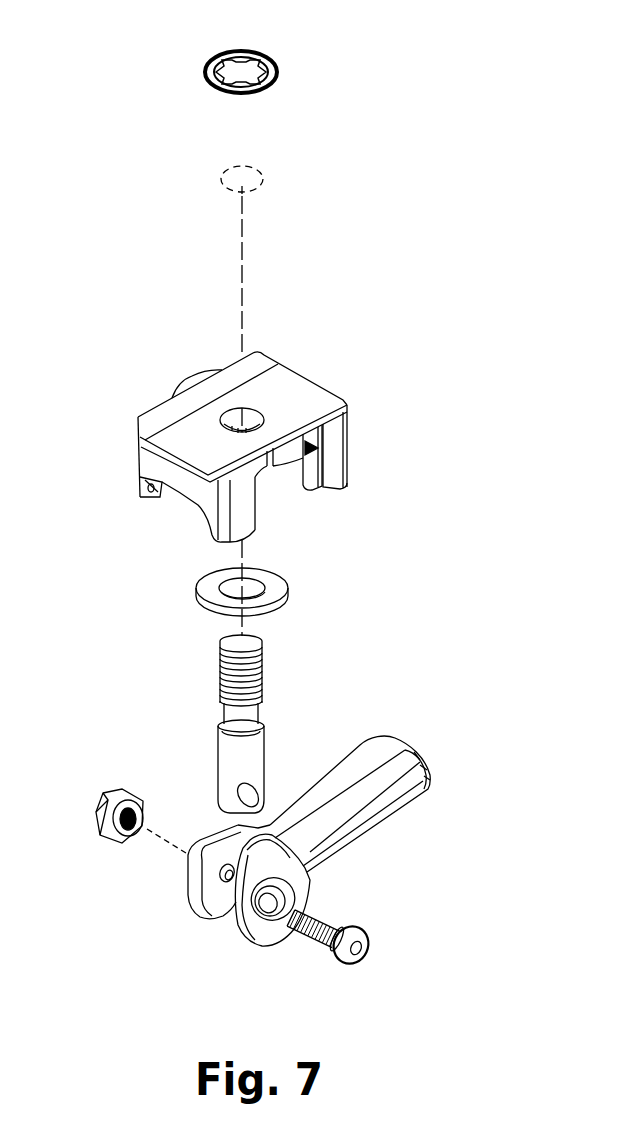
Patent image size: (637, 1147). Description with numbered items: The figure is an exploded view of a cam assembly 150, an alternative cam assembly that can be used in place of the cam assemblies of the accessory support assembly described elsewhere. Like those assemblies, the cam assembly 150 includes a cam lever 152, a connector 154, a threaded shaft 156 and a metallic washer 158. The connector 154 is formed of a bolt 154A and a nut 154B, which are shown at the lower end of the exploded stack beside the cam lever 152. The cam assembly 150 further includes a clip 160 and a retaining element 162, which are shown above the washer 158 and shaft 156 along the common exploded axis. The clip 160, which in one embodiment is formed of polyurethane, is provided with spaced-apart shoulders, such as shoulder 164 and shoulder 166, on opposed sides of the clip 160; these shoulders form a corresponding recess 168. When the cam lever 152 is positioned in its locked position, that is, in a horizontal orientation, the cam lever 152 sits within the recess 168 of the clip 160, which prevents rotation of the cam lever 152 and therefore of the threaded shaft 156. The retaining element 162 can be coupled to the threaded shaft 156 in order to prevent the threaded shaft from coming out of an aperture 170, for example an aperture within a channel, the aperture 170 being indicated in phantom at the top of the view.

The cam assembly 150 is at (139, 30).
The cam lever 152 is at (430, 770).
The connector 154 is at (384, 952).
The bolt 154A is at (345, 963).
The nut 154B is at (97, 826).
The threaded shaft 156 is at (228, 760).
The metallic washer 158 is at (284, 584).
The clip 160 is at (205, 470).
The retaining element 162 is at (208, 80).
The shoulder 164 is at (143, 492).
The shoulder 166 is at (212, 528).
The recess 168 is at (184, 498).
The aperture 170 is at (264, 177).